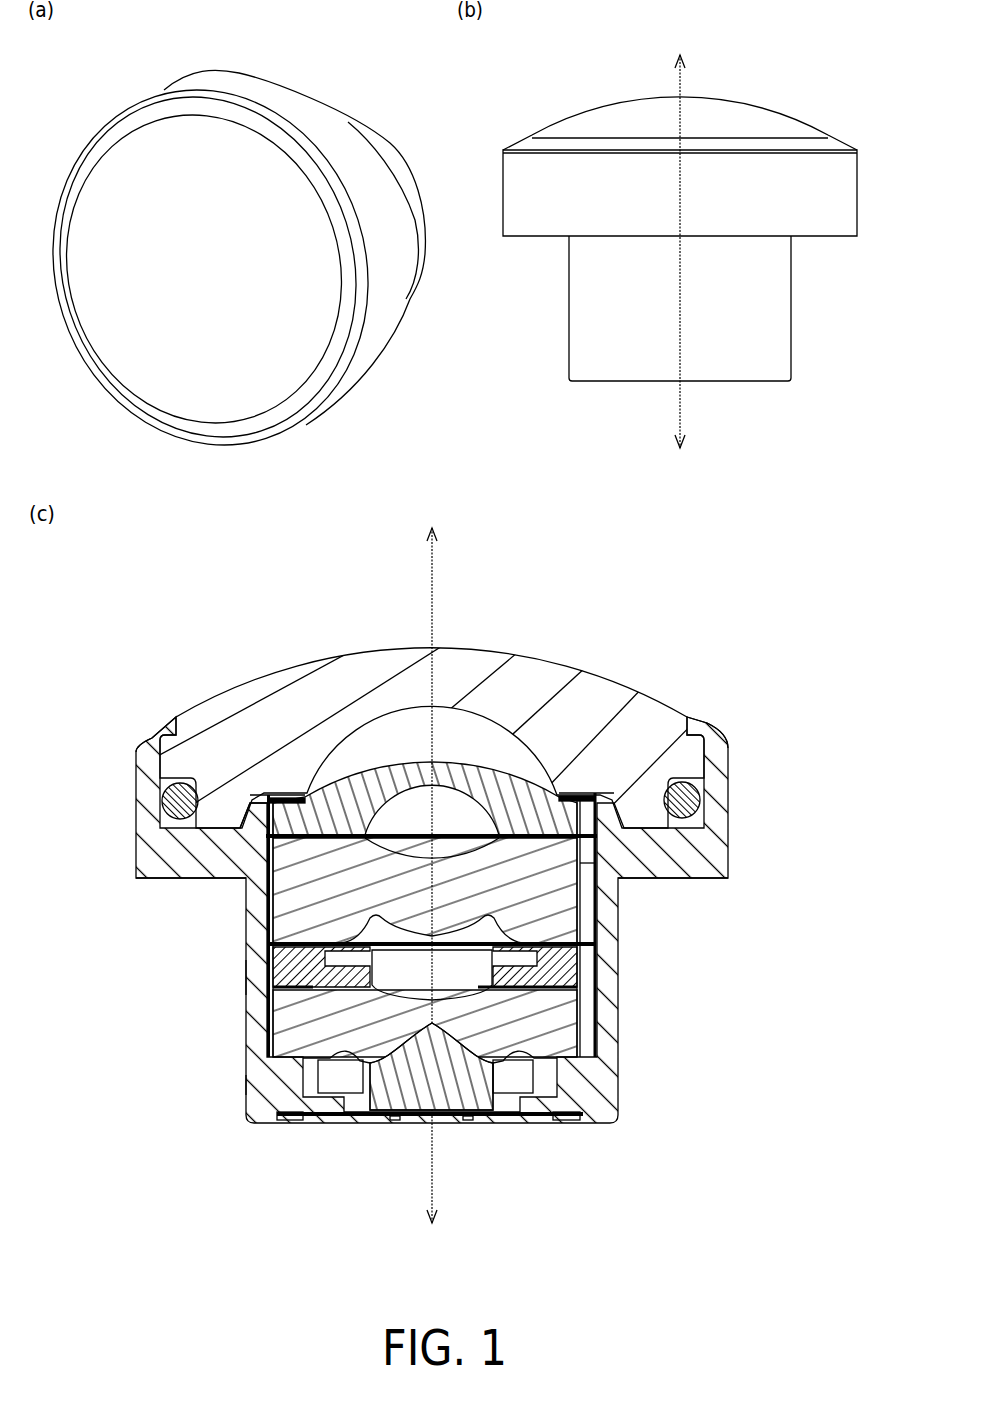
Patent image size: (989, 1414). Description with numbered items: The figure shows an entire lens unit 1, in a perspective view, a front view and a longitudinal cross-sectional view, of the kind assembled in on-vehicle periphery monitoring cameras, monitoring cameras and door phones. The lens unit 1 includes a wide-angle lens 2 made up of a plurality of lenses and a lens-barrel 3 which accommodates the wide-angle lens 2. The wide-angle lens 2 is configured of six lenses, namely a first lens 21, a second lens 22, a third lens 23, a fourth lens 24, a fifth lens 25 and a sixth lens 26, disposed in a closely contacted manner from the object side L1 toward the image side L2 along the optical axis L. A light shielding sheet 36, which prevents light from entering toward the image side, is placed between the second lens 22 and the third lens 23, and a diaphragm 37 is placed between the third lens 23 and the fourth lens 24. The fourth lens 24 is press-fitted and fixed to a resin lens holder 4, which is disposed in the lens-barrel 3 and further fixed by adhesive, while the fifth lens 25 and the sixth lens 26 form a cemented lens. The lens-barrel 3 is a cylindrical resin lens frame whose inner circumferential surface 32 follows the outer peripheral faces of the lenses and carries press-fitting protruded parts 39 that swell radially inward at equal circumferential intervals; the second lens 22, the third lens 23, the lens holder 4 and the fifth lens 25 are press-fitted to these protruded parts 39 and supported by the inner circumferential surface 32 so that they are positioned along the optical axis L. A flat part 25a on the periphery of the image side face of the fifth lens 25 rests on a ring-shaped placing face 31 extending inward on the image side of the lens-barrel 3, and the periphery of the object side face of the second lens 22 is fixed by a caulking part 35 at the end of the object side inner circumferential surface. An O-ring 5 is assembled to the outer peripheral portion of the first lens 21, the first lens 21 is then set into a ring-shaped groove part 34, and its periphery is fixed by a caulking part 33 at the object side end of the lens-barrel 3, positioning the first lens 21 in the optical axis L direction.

The lens unit 1 is at (79, 60).
The wide-angle lens 2 is at (133, 188).
The lens-barrel 3 is at (395, 347).
The lens holder 4 is at (245, 977).
The O-ring 5 is at (162, 800).
The first lens 21 is at (733, 113).
The second lens 22 is at (448, 770).
The third lens 23 is at (462, 870).
The fourth lens 24 is at (468, 970).
The fifth lens 25 is at (480, 1025).
The sixth lens 26 is at (490, 1060).
The flat part 25a is at (245, 1082).
The placing face 31 is at (272, 1033).
The inner circumferential surface 32 is at (270, 778).
The caulking part 33 is at (148, 730).
The groove part 34 is at (135, 867).
The caulking part 35 is at (262, 793).
The light shielding sheet 36 is at (248, 876).
The diaphragm 37 is at (592, 970).
The press-fitting protruded parts 39 is at (245, 920).
The optical axis L is at (676, 420).
The object side L1 is at (557, 624).
The image side L2 is at (560, 863).